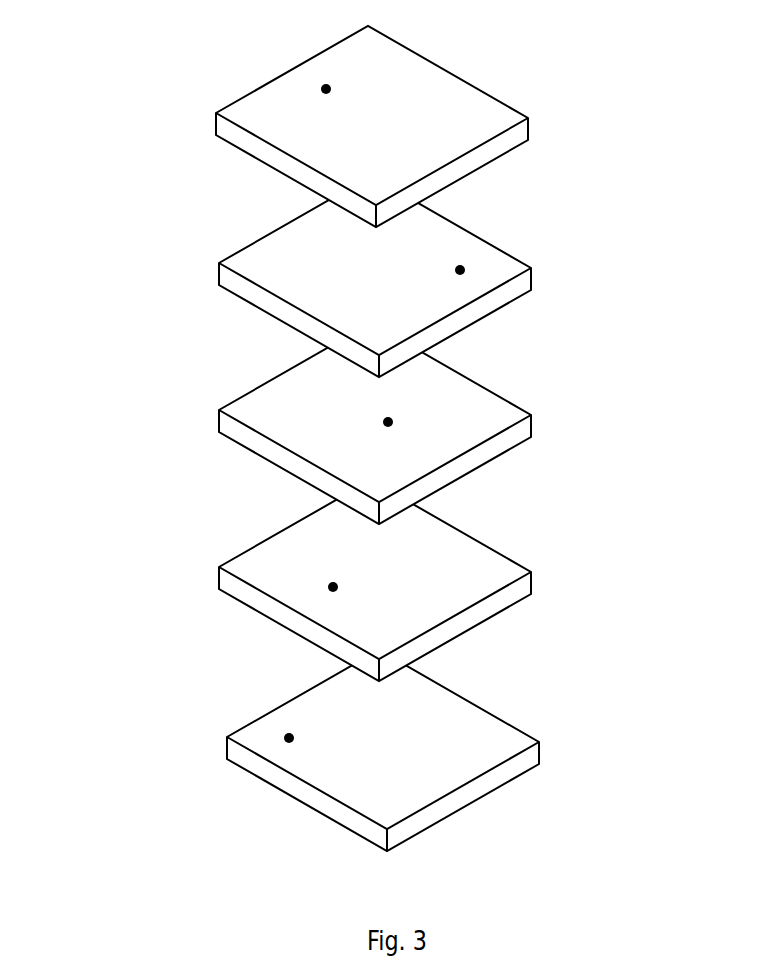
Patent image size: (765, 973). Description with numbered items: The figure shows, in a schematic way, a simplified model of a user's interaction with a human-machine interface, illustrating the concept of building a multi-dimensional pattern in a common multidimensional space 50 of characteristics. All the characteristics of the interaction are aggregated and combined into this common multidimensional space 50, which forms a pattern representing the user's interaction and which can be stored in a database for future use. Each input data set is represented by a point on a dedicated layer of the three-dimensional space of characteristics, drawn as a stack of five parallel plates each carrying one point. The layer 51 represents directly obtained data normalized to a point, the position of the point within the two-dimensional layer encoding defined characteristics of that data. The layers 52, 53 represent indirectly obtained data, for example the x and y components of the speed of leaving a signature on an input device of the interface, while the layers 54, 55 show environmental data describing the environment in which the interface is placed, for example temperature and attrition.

The common multidimensional space 50 is at (354, 438).
The layer 51 is at (532, 127).
The layer 52 is at (533, 276).
The layer 53 is at (537, 425).
The layer 54 is at (537, 582).
The layer 55 is at (543, 751).